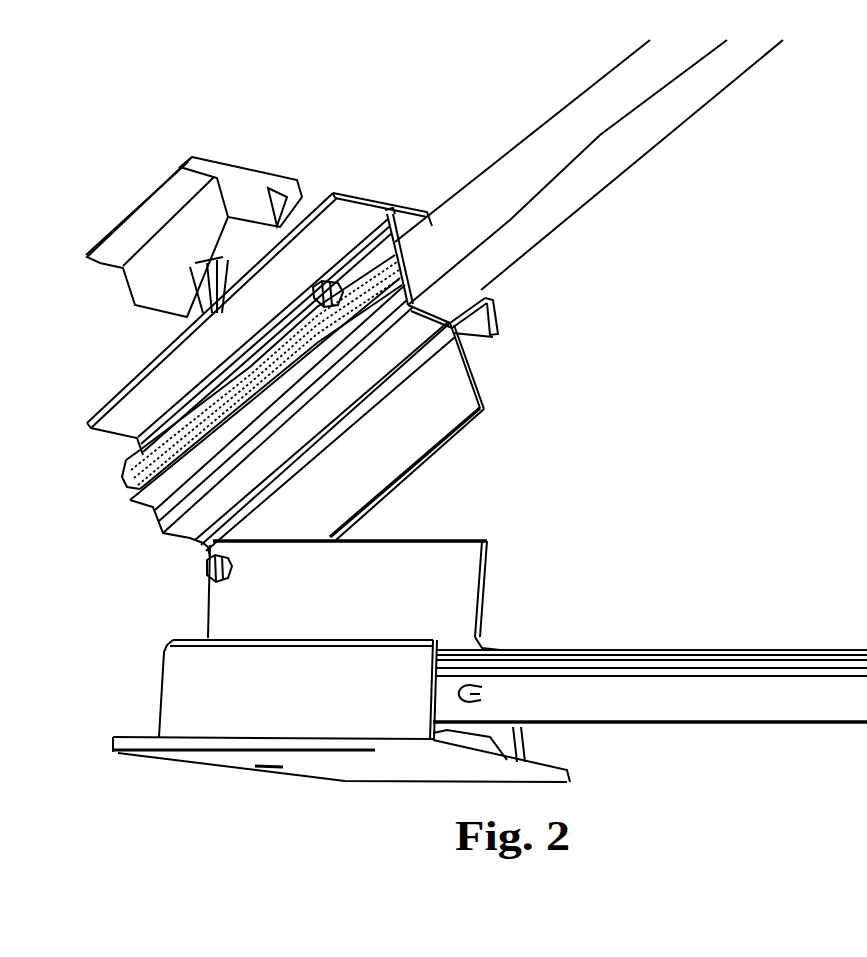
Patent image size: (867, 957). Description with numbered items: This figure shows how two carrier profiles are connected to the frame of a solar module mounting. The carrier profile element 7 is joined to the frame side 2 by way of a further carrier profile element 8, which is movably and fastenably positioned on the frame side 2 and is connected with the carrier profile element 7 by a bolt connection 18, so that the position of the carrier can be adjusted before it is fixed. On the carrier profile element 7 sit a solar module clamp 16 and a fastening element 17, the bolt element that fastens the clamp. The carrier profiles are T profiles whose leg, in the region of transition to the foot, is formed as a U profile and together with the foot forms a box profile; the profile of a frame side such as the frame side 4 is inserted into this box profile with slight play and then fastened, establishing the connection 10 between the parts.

The frame side 2 is at (647, 688).
The frame side 4 is at (587, 200).
The carrier profile element 7 is at (350, 205).
The carrier profile element 8 is at (181, 686).
The connection 10 is at (228, 755).
The solar module clamp 16 is at (233, 183).
The fastening element 17 is at (314, 303).
The bolt connection 18 is at (207, 563).